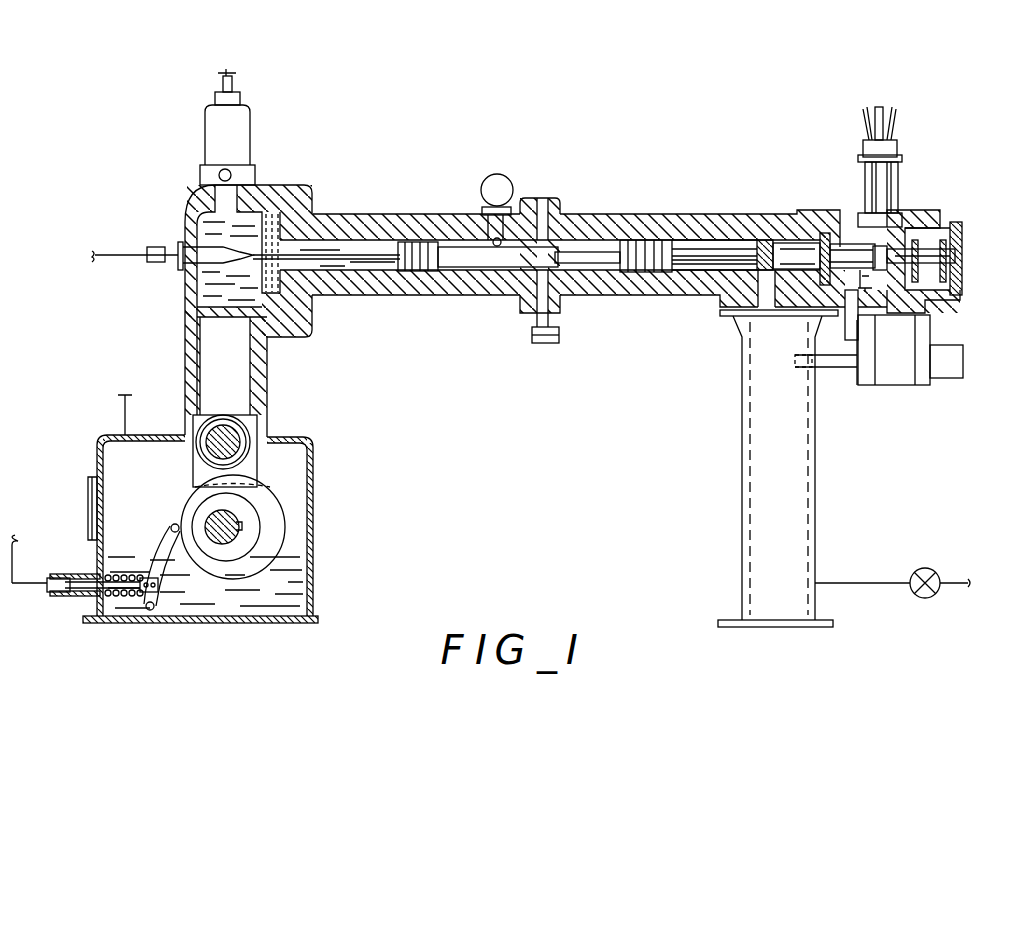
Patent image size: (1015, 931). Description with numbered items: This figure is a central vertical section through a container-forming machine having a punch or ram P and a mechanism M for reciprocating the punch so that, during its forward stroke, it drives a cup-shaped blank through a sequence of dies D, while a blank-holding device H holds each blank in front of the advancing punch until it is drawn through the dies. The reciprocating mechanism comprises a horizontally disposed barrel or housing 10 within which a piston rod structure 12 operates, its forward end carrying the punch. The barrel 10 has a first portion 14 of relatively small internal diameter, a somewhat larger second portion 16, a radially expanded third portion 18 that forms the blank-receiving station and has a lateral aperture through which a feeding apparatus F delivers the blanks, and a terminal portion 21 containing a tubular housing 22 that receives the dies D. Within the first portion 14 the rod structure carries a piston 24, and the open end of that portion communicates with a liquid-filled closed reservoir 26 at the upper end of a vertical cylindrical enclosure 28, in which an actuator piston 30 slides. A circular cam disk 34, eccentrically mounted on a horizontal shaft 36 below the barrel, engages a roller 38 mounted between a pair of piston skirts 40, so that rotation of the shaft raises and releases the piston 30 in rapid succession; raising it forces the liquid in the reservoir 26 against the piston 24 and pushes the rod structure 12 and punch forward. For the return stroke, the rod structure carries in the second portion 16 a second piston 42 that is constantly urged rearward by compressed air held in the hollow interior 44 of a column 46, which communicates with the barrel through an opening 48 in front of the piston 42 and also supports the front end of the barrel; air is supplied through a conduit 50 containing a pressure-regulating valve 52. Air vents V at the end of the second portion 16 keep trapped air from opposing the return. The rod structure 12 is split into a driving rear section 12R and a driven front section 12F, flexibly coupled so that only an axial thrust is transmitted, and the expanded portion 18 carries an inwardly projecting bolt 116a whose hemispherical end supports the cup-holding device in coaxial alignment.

The barrel or housing 10 is at (406, 294).
The piston rod structure 12 is at (591, 266).
The rear piston rod section 12R is at (473, 266).
The front piston rod section 12F is at (745, 243).
The first barrel portion 14 is at (355, 288).
The second barrel portion 16 is at (705, 240).
The third barrel portion 18 is at (852, 292).
The terminal portion 21 is at (925, 215).
The tubular housing 22 is at (955, 292).
The piston 24 is at (418, 244).
The closed reservoir 26 is at (270, 228).
The cylindrical enclosure 28 is at (187, 378).
The piston 30 is at (268, 385).
The circular cam disk 34 is at (187, 498).
The shaft 36 is at (203, 520).
The roller 38 is at (243, 428).
The piston skirts 40 is at (258, 468).
The second piston 42 is at (645, 242).
The hollow interior 44 is at (790, 550).
The column 46 is at (815, 550).
The opening 48 is at (758, 292).
The conduit 50 is at (855, 584).
The pressure-regulating valve 52 is at (915, 570).
The inwardly projecting bolt 116a is at (872, 288).
The mechanism for reciprocating the punch M is at (155, 213).
The air vents V is at (535, 200).
The feeding apparatus F is at (885, 107).
The blank-holding device H is at (860, 246).
The dies D is at (915, 240).
The punch or ram P is at (950, 258).